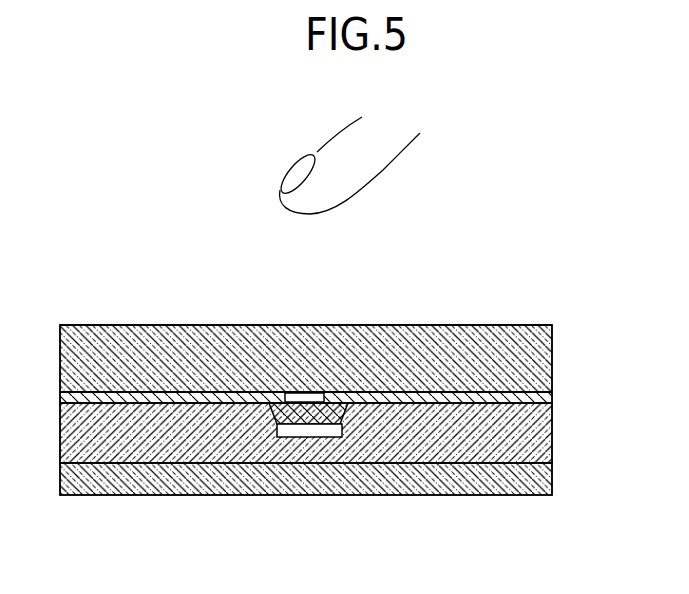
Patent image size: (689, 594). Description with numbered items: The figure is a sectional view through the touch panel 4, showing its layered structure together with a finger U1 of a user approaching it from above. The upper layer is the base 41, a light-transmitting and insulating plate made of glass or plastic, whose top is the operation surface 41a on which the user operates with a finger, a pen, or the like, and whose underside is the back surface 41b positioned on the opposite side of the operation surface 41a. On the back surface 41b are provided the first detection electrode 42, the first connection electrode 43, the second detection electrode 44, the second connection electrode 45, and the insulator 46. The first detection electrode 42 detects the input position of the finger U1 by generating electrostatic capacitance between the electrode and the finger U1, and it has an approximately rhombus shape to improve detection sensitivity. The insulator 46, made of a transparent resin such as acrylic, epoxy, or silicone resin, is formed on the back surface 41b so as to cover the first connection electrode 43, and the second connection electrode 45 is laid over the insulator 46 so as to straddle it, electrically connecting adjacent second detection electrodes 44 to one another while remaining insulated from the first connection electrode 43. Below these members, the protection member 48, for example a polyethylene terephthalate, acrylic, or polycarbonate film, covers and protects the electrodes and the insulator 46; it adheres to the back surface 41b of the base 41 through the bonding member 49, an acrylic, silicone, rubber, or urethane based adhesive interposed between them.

The touch panel 4 is at (529, 186).
The finger U1 is at (333, 148).
The base 41 is at (552, 357).
The operation surface 41a is at (512, 325).
The back surface 41b is at (536, 416).
The first detection electrode 42 is at (167, 396).
The first connection electrode 43 is at (305, 394).
The second detection electrode 44 is at (445, 392).
The second connection electrode 45 is at (297, 423).
The insulator 46 is at (336, 430).
The protection member 48 is at (552, 480).
The bonding member 49 is at (540, 427).